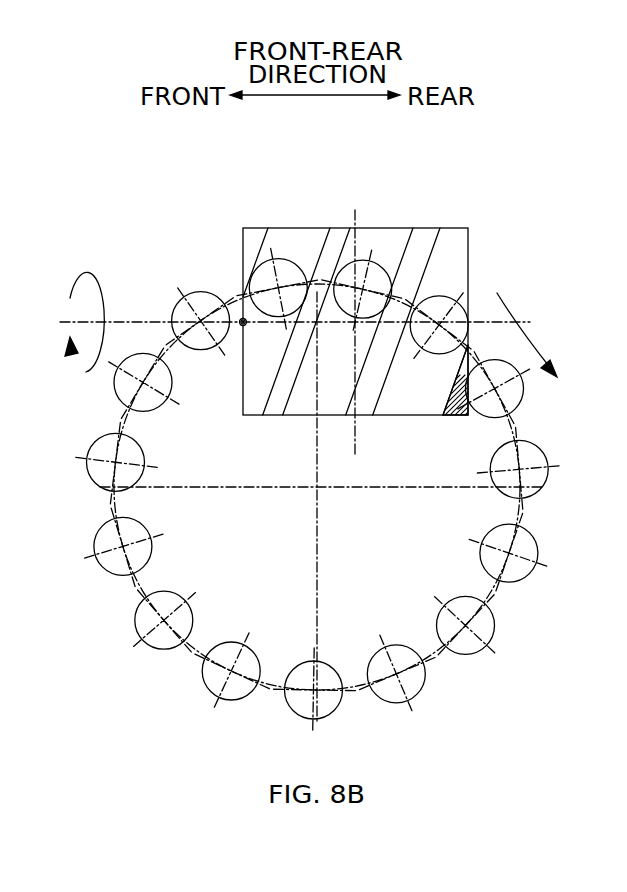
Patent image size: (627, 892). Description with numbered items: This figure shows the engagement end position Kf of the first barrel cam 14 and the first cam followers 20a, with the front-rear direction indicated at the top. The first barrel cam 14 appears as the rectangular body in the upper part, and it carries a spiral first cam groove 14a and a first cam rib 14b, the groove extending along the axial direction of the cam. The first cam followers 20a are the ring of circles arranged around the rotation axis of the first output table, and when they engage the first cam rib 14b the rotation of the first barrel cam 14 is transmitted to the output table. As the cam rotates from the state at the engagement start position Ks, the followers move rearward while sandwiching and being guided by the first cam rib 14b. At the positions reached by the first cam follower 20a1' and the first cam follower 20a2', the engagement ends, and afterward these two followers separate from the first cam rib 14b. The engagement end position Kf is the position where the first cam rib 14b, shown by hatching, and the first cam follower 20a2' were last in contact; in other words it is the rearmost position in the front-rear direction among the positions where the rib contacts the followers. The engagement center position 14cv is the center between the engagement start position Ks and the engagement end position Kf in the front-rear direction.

The first barrel cam 14 is at (468, 228).
The first cam groove 14a is at (330, 415).
The first cam rib 14b is at (336, 228).
The engagement center position 14cv is at (355, 228).
The first cam follower 20a is at (535, 473).
The first cam follower 20a1' is at (447, 278).
The first cam follower 20a2' is at (538, 389).
The engagement start position Ks is at (243, 321).
The engagement end position Kf is at (470, 398).